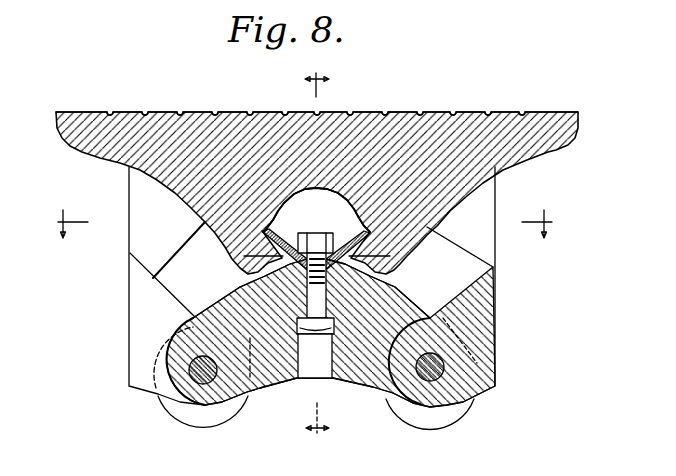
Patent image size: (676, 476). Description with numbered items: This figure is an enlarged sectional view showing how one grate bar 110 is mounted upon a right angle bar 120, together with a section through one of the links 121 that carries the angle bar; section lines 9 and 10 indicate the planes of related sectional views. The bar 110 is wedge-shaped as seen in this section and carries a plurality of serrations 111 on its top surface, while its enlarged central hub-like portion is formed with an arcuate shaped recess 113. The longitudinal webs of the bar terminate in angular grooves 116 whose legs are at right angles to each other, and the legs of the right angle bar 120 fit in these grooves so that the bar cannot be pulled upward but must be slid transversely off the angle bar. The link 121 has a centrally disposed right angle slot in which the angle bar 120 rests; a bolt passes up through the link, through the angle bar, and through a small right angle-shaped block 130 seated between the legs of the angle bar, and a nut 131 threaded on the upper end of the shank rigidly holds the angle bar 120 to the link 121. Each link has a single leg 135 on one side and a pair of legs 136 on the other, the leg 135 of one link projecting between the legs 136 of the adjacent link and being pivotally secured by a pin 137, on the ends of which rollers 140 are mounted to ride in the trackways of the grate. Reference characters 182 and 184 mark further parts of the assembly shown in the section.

The section line 9- 9 is at (317, 254).
The section line 10- 10 is at (301, 224).
The grate bar 110 is at (510, 113).
The serrations 111 is at (418, 112).
The arcuate shaped recess 113 is at (335, 178).
The angular groove 116 is at (341, 203).
The right angle bar 120 is at (394, 258).
The link 121 is at (348, 383).
The right angle-shaped block 130 is at (382, 275).
The nut 131 is at (317, 233).
The single leg 135 is at (253, 391).
The pair of legs 136 is at (143, 356).
The pin 137 is at (163, 397).
The roller 140 is at (195, 417).
The seating surface 182 is at (248, 283).
The left clamping wedge 184 is at (236, 259).